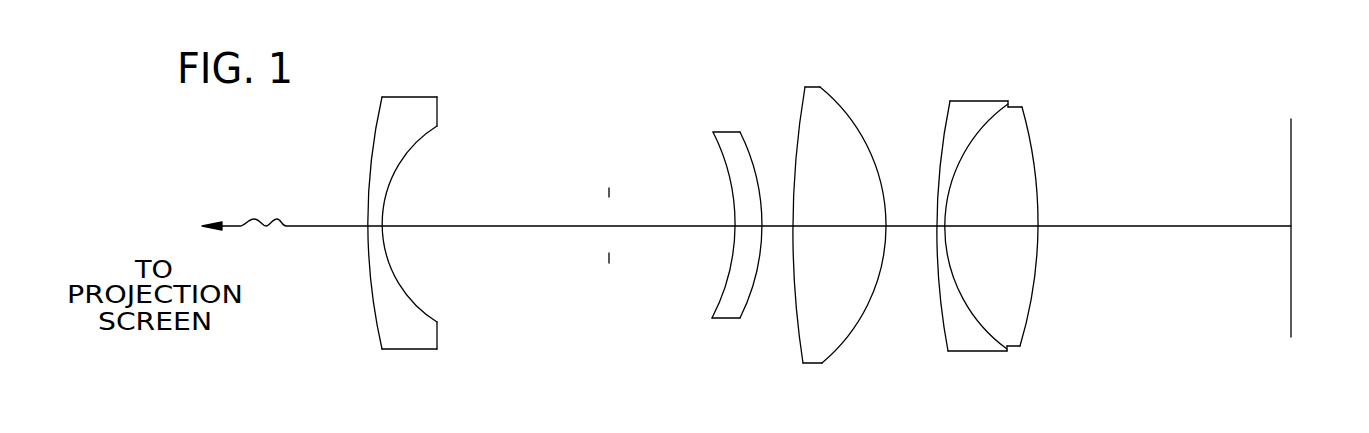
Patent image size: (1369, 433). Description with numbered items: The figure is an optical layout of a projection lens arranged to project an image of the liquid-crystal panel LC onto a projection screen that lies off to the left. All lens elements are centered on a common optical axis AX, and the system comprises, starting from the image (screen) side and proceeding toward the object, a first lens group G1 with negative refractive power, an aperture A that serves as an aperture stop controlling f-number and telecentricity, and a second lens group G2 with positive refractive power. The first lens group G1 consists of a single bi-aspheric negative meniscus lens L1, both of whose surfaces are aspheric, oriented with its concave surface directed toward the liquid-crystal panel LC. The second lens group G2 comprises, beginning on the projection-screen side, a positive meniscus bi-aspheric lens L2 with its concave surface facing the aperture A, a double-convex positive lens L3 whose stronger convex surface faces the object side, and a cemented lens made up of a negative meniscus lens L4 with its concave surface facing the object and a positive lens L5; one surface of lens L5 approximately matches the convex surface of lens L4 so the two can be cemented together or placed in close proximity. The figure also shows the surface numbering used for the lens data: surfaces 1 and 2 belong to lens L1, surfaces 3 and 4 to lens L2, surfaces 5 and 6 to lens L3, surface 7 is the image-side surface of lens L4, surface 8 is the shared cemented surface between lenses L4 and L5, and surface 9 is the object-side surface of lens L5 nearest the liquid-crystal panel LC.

The first lens surface 1 is at (373, 312).
The second lens surface 2 is at (417, 305).
The third lens surface 3 is at (717, 299).
The fourth lens surface 4 is at (740, 299).
The fifth lens surface 5 is at (796, 316).
The sixth lens surface 6 is at (858, 318).
The seventh lens surface 7 is at (943, 315).
The eighth lens surface 8 is at (988, 327).
The ninth lens surface 9 is at (1047, 235).
The bi-aspheric negative meniscus lens L1 is at (410, 187).
The positive meniscus bi-aspheric lens L2 is at (725, 206).
The double-convex positive lens L3 is at (829, 191).
The negative meniscus lens L4 is at (960, 207).
The positive lens L5 is at (1040, 196).
The first lens group G1 is at (410, 224).
The second lens group G2 is at (879, 217).
The aperture A is at (612, 192).
The optical axis AX is at (1167, 228).
The liquid-crystal panel LC is at (1292, 137).